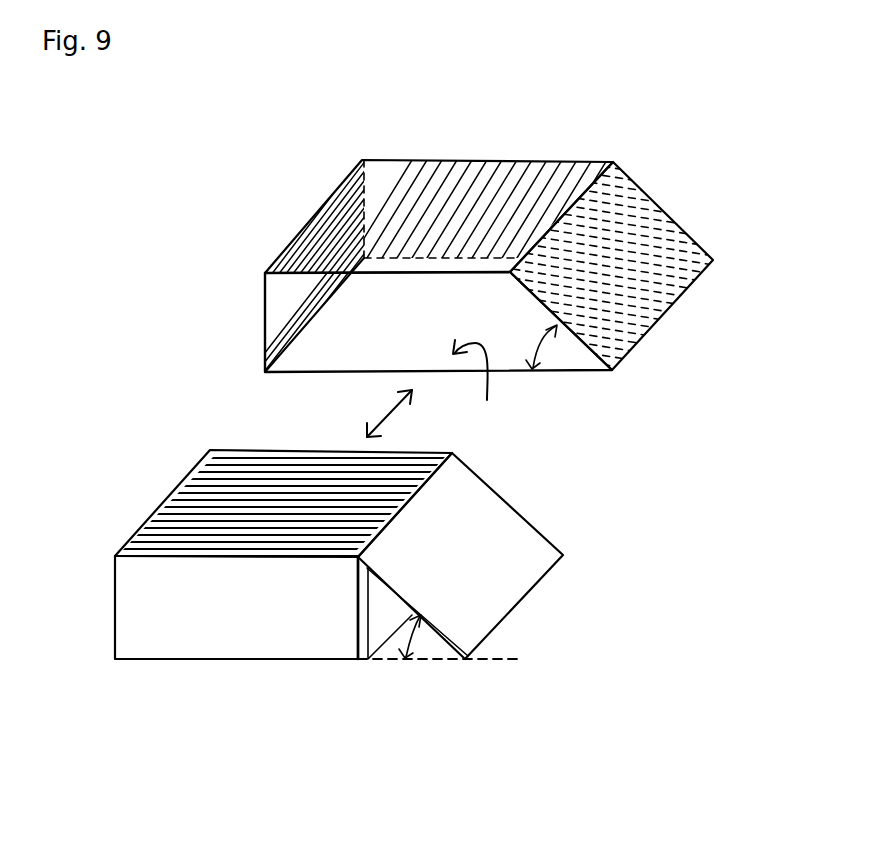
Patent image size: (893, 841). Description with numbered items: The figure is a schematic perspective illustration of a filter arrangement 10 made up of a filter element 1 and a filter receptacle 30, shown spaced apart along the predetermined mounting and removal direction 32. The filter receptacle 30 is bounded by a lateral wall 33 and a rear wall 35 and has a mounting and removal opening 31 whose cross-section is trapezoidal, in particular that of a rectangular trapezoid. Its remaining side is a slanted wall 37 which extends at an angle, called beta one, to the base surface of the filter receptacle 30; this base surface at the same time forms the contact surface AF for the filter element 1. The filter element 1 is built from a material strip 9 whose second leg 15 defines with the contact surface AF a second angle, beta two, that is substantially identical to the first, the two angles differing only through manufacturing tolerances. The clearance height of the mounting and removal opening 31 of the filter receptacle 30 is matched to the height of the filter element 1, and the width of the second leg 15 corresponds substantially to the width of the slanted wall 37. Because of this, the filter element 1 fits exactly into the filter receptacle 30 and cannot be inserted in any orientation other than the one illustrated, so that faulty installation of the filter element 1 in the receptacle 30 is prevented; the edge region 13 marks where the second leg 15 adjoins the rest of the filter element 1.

The filter arrangement 10 is at (148, 150).
The filter receptacle 30 is at (710, 327).
The rear wall 35 is at (507, 161).
The lateral wall 33 is at (308, 221).
The slanted wall 37 is at (670, 215).
The mounting and removal opening 31 is at (273, 375).
The contact surface AF is at (490, 380).
The mounting and removal direction 32 is at (382, 413).
The filter element 1 is at (133, 492).
The second leg 15 is at (557, 540).
The hinge edge of base body 13 is at (362, 661).
The material strip 9 is at (448, 692).